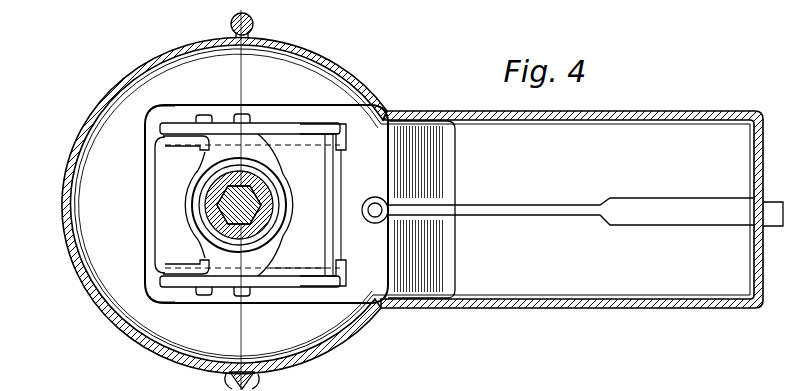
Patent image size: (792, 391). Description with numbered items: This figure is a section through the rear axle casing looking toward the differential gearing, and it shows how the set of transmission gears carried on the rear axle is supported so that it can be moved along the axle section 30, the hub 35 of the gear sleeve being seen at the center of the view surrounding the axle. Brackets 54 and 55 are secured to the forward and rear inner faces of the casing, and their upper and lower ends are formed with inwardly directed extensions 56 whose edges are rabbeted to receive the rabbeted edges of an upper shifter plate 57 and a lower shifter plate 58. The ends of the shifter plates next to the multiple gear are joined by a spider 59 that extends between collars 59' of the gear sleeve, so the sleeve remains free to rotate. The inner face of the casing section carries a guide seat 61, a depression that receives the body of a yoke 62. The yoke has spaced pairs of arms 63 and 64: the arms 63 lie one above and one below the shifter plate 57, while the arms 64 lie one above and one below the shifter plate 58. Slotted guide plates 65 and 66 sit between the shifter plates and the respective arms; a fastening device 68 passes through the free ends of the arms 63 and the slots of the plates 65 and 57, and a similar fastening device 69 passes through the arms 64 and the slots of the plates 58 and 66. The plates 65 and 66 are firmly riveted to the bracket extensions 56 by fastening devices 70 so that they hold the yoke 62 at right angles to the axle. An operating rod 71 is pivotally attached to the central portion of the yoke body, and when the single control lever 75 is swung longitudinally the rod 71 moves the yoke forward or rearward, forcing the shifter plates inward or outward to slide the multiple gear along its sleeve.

The axle section 30 is at (340, 112).
The spindle hub 35 is at (200, 224).
The bracket 54 is at (323, 197).
The bracket 55 is at (145, 188).
The inwardly directed extension 56 is at (170, 287).
The upper shifter plate 57 is at (258, 132).
The lower shifter plate 58 is at (263, 282).
The spider 59 is at (186, 163).
The collar 59' is at (252, 205).
The guide seat 61 is at (421, 209).
The yoke 62 is at (336, 273).
The arm 63 is at (310, 126).
The arm 64 is at (300, 270).
The plate 65 is at (202, 121).
The plate 66 is at (195, 292).
The fastening device 68 is at (222, 118).
The fastening device 69 is at (213, 300).
The rivet 70 is at (180, 112).
The operating rod 71 is at (548, 205).
The control lever 75 is at (639, 114).